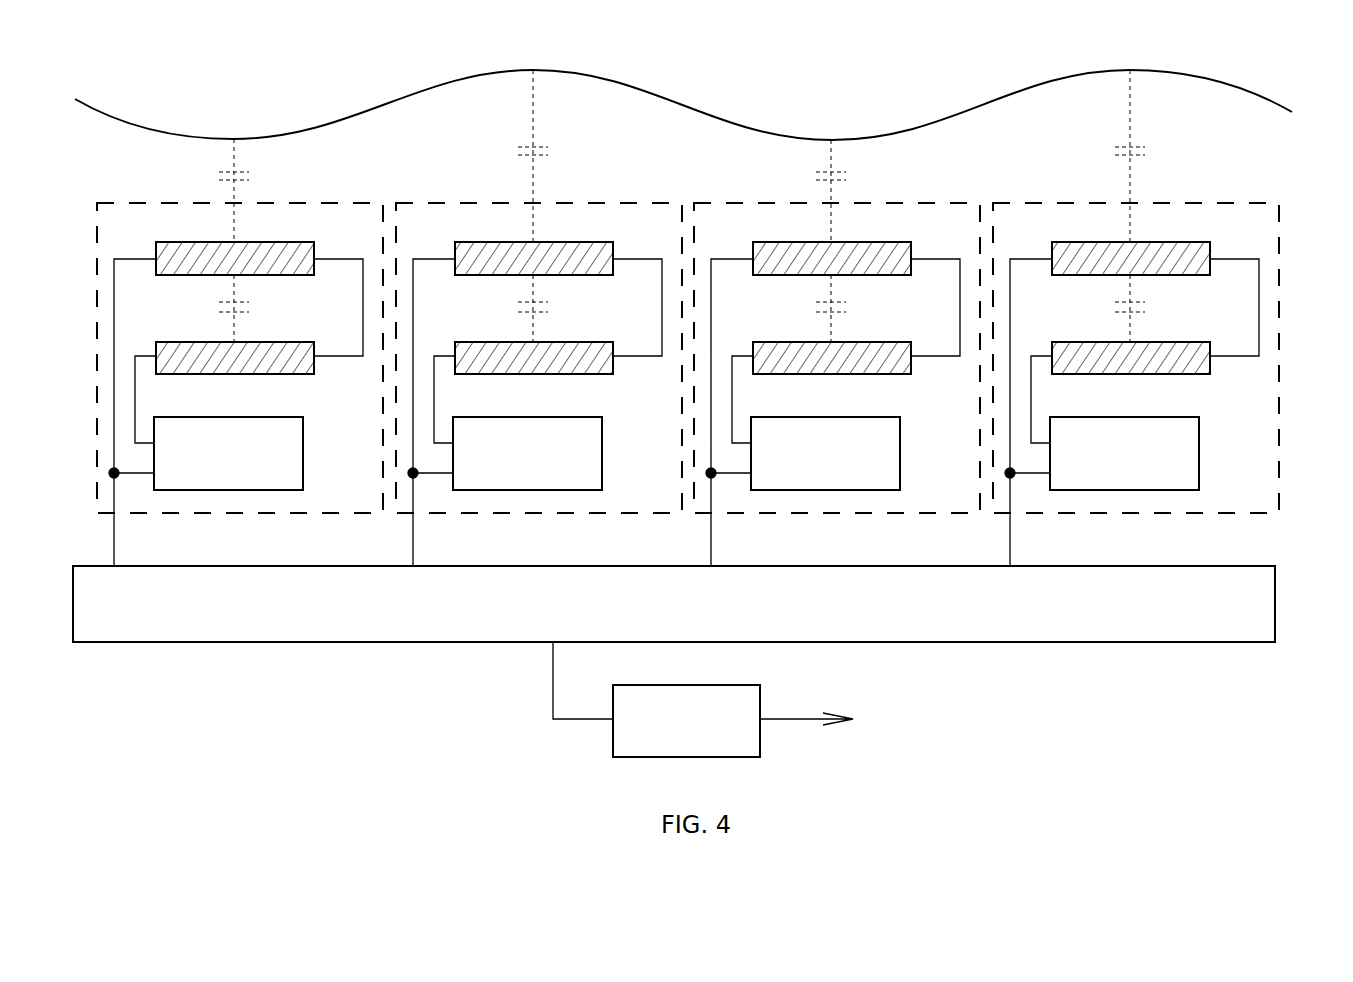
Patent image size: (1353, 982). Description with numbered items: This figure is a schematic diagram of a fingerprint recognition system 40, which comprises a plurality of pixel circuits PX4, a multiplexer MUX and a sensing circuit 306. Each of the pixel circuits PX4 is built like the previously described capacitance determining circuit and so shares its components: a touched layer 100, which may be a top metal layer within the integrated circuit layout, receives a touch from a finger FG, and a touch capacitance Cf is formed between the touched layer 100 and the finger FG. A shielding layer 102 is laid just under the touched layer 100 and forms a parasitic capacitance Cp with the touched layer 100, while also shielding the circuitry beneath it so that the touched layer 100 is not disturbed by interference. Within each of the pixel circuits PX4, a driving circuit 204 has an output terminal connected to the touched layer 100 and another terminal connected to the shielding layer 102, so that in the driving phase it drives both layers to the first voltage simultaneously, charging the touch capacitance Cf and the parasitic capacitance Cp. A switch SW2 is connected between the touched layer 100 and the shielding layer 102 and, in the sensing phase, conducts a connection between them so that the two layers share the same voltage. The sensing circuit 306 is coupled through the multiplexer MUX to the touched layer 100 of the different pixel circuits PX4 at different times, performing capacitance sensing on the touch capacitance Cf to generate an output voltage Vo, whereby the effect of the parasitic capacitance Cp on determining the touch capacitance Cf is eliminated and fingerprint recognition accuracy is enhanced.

The fingerprint recognition system 40 is at (1252, 161).
The touched layer 100 is at (283, 242).
The shielding layer 102 is at (205, 342).
The driving circuit 204 is at (285, 417).
The sensing circuit 306 is at (742, 685).
The pixel circuits PX4 is at (237, 515).
The switch SW2 is at (372, 313).
The parasitic capacitance Cp is at (700, 309).
The touch capacitance Cf is at (667, 164).
The finger FG is at (683, 105).
The multiplexer MUX is at (1174, 642).
The output voltage Vo is at (824, 721).